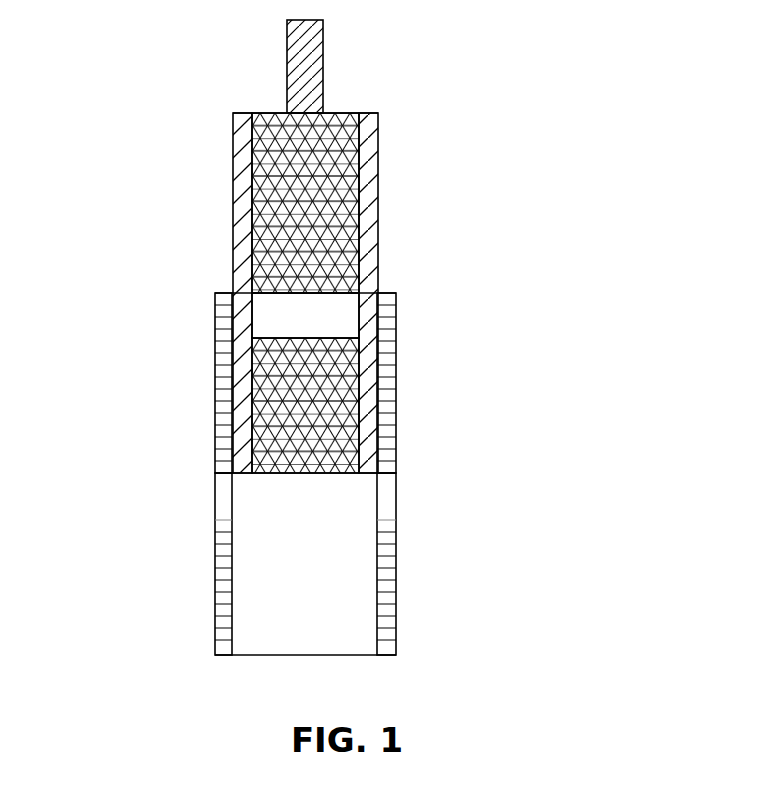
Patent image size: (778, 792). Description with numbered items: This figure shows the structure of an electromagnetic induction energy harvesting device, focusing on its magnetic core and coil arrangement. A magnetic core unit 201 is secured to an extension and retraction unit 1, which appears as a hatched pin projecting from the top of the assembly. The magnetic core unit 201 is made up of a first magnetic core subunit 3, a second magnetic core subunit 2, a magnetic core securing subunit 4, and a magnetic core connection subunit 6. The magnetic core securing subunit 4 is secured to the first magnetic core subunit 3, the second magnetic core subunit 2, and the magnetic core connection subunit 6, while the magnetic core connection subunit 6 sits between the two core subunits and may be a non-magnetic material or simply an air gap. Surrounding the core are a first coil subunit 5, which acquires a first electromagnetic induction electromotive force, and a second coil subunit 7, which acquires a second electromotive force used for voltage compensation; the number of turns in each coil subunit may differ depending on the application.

The extension and retraction unit 1 is at (300, 62).
The second magnetic core subunit 2 is at (270, 162).
The first magnetic core subunit 3 is at (318, 442).
The magnetic core securing subunit 4 is at (240, 258).
The first coil subunit 5 is at (220, 382).
The magnetic core connection subunit 6 is at (325, 313).
The second coil subunit 7 is at (222, 583).
The magnetic core unit 201 is at (366, 265).